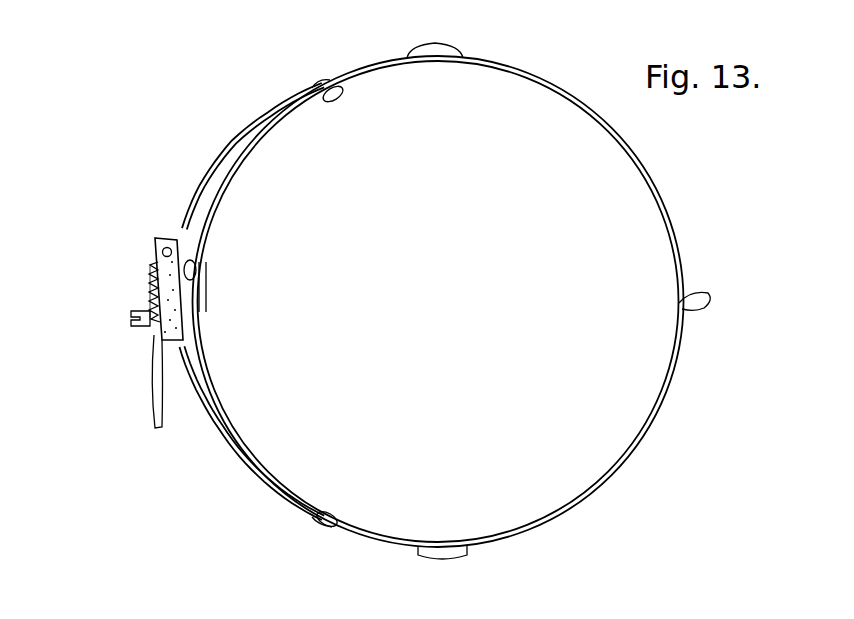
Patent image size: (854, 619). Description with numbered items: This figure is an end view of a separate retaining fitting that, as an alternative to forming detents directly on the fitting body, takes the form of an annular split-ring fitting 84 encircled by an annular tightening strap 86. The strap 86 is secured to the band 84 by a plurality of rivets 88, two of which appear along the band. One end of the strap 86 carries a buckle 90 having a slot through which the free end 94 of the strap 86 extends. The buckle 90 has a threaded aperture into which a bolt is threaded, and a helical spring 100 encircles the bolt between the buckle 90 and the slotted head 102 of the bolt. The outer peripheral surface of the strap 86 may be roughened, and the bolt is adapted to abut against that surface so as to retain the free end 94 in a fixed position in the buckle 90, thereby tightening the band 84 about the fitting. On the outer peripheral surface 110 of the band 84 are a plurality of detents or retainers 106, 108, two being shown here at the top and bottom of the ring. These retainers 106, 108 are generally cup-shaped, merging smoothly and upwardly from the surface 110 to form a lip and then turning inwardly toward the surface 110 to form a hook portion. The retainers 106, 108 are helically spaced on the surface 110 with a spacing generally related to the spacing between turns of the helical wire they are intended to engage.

The annular split-ring fitting 84 is at (654, 179).
The annular tightening strap 86 is at (215, 160).
The rivets 88 is at (323, 78).
The buckle 90 is at (154, 242).
The free end of strap 94 is at (150, 410).
The helical spring 100 is at (147, 295).
The slotted head of the bolt 102 is at (129, 318).
The retainer 106 is at (437, 52).
The retainer 108 is at (448, 559).
The outer peripheral surface of band 110 is at (692, 302).